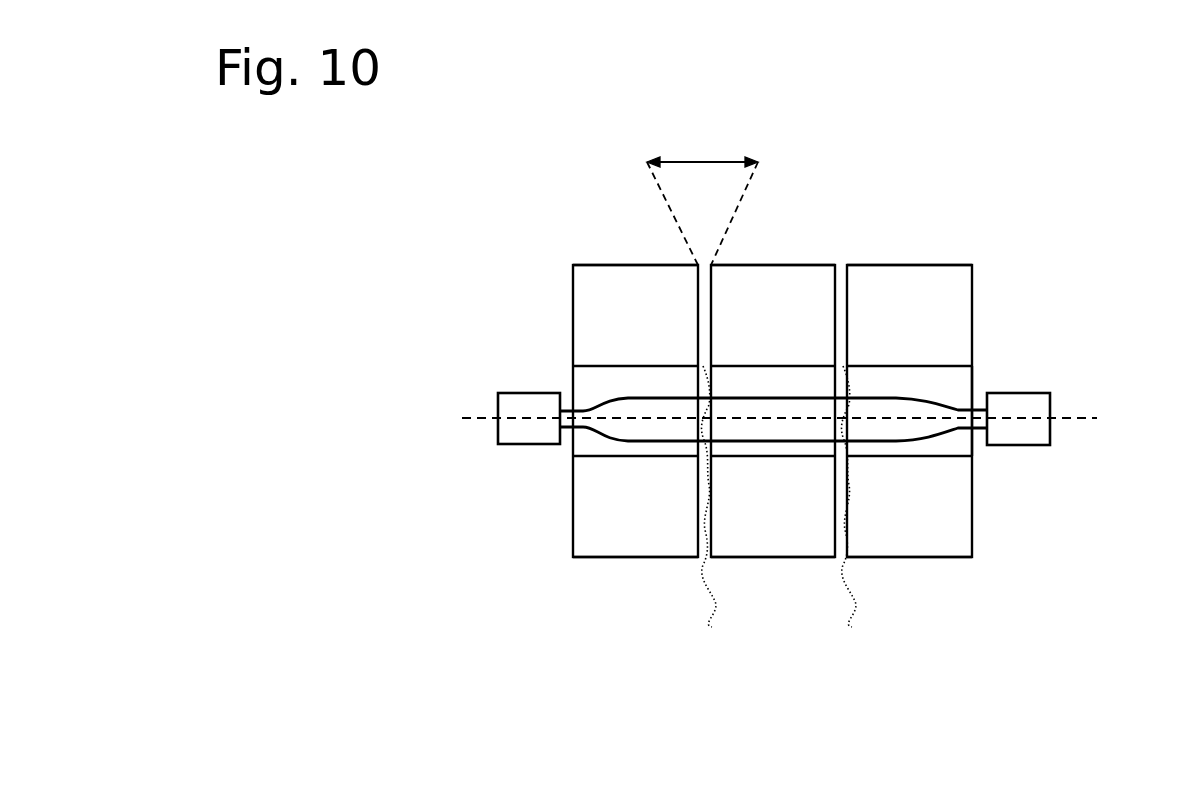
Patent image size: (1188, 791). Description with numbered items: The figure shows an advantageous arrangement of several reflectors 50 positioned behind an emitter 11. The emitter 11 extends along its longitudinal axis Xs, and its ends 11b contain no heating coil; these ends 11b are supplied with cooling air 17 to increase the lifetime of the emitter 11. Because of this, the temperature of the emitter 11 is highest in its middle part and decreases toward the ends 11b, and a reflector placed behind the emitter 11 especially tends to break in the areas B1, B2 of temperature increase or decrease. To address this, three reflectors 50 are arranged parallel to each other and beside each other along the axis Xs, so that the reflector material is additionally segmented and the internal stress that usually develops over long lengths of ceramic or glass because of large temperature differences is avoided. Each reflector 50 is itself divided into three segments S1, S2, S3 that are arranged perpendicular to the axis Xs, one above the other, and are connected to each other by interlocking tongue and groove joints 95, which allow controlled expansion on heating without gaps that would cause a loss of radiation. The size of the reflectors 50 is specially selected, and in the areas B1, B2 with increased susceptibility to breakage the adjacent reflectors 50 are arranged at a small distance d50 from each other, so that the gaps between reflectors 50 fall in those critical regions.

The back reflector 50 is at (578, 297).
The interlocking tongue and groove joints 95 is at (877, 366).
The first segment S1 is at (963, 300).
The second segment S2 is at (963, 390).
The third segment S3 is at (963, 530).
The emitter 11 is at (767, 430).
The ends of the emitter 11b is at (531, 400).
The cooling air 17 is at (537, 469).
The longitudinal axis of the emitter Xs is at (804, 413).
The distance between adjacent reflectors d50 is at (702, 197).
The area of temperature change B1 is at (730, 505).
The area of temperature change B2 is at (868, 505).